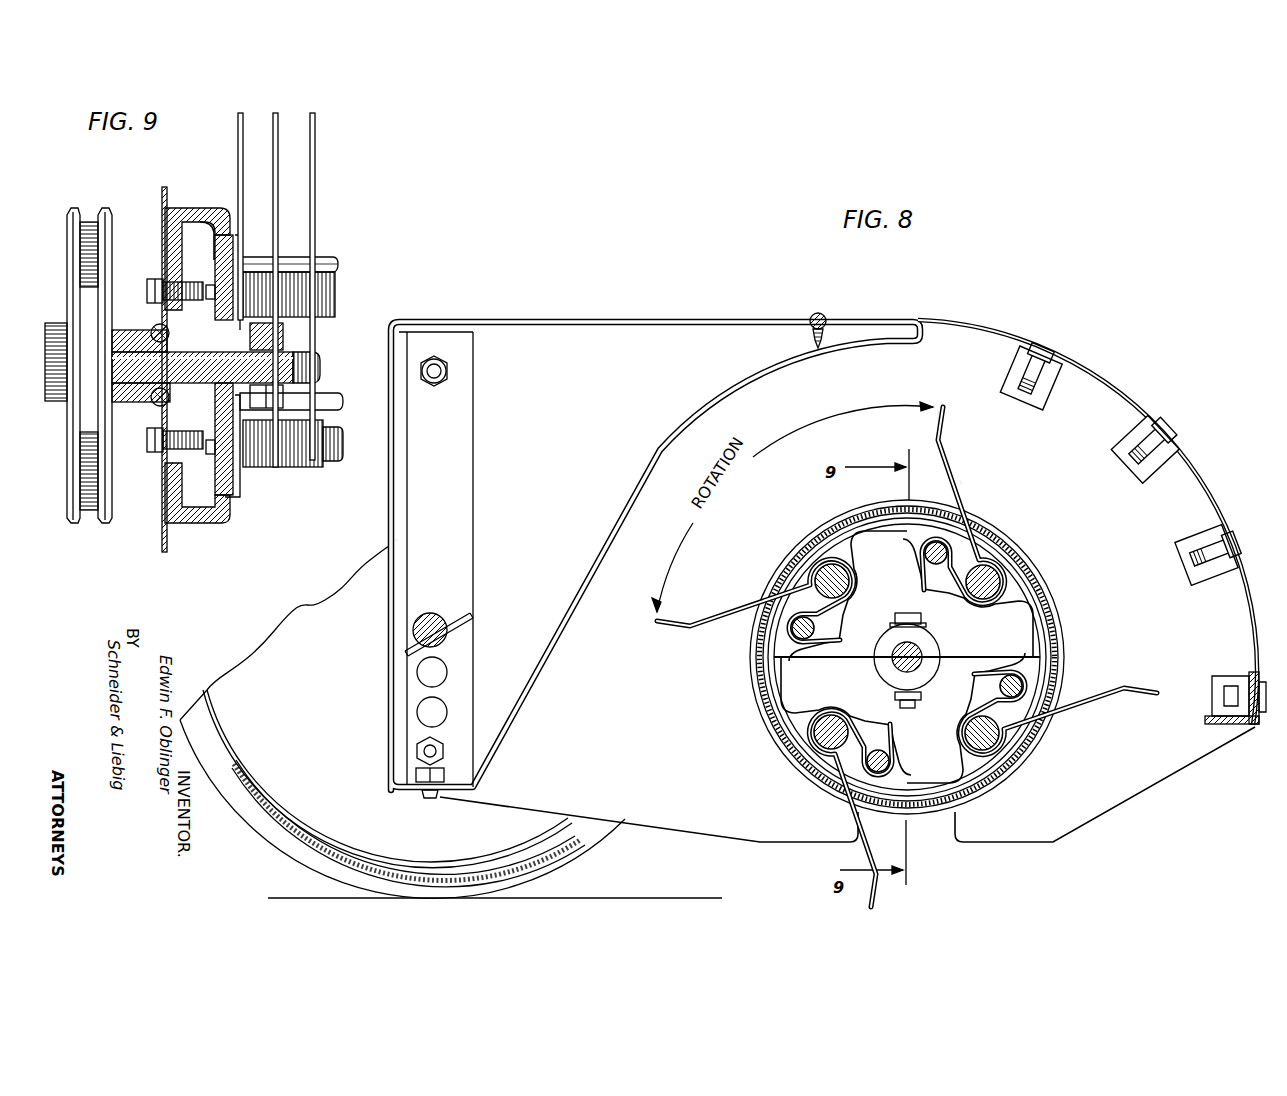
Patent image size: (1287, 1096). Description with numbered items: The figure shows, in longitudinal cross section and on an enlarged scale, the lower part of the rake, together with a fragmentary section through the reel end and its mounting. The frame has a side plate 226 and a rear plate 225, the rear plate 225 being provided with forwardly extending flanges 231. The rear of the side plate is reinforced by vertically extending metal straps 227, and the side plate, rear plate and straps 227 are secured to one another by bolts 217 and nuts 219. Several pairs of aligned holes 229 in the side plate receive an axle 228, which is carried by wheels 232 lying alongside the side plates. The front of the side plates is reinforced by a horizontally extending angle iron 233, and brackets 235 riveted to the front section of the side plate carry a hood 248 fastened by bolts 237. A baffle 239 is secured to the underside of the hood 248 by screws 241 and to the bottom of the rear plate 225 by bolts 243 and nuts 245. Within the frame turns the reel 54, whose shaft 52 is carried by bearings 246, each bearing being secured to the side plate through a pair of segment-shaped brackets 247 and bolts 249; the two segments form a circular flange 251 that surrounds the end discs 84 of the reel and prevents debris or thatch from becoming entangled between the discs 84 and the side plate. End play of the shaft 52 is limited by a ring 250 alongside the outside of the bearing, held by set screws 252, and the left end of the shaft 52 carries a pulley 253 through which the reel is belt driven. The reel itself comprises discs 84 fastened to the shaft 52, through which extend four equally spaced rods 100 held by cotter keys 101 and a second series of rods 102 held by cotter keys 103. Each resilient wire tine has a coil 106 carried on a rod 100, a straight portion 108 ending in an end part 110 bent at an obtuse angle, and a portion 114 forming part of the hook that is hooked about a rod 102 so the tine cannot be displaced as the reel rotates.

In FIG. 8, the shaft 52 is at (920, 650).
In FIG. 8, the reel 54 is at (1040, 622).
In FIG. 9, the discs 84 is at (236, 488).
In FIG. 9, the rods 100 is at (334, 288).
In FIG. 8, the rods 100 is at (1005, 585).
In FIG. 9, the cotter keys 101 is at (210, 290).
In FIG. 9, the rods 102 is at (320, 262).
In FIG. 8, the rods 102 is at (872, 718).
In FIG. 9, the cotter keys 103 is at (218, 240).
In FIG. 8, the coil 106 is at (850, 584).
In FIG. 9, the portion 108 is at (318, 175).
In FIG. 8, the portion 108 is at (963, 480).
In FIG. 9, the end part 110 is at (318, 122).
In FIG. 8, the end part 110 is at (943, 423).
In FIG. 8, the portion 114 is at (928, 592).
In FIG. 8, the bolts 217 is at (441, 365).
In FIG. 8, the nuts 219 is at (447, 381).
In FIG. 8, the rear plate 225 is at (392, 472).
In FIG. 9, the side plate 226 is at (164, 186).
In FIG. 8, the side plate 226 is at (1098, 378).
In FIG. 8, the metal straps 227 is at (455, 470).
In FIG. 8, the axle 228 is at (452, 612).
In FIG. 8, the holes 229 is at (445, 706).
In FIG. 8, the flanges 231 is at (396, 540).
In FIG. 8, the wheels 232 is at (313, 630).
In FIG. 8, the angle iron 233 is at (1225, 728).
In FIG. 8, the brackets 235 is at (1195, 548).
In FIG. 8, the bolts 237 is at (1170, 400).
In FIG. 8, the baffle 239 is at (738, 397).
In FIG. 8, the screws 241 is at (818, 318).
In FIG. 8, the bolts 243 is at (428, 800).
In FIG. 8, the nuts 245 is at (416, 775).
In FIG. 9, the bearings 246 is at (160, 324).
In FIG. 9, the segment-shaped brackets 247 is at (176, 228).
In FIG. 8, the segment-shaped brackets 247 is at (1018, 556).
In FIG. 8, the hood 248 is at (1195, 460).
In FIG. 9, the bolts 249 is at (165, 277).
In FIG. 9, the ring 250 is at (128, 404).
In FIG. 9, the circular flange 251 is at (200, 208).
In FIG. 9, the set screws 252 is at (157, 330).
In FIG. 9, the pulley 253 is at (86, 526).